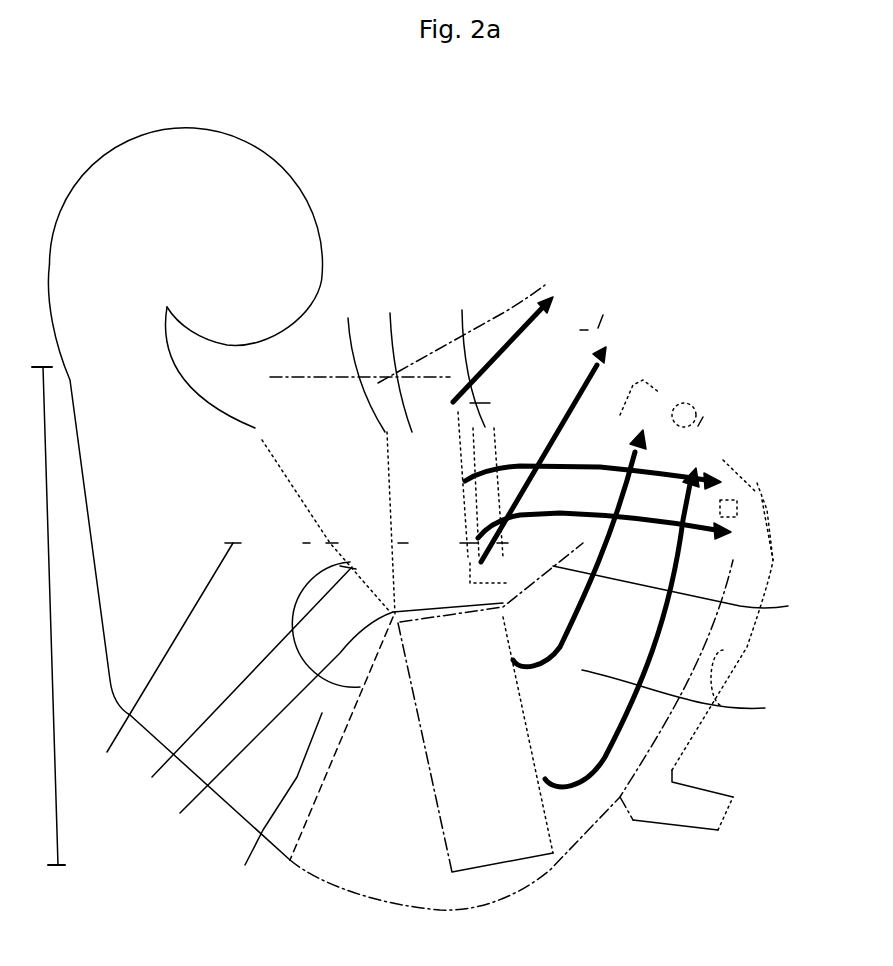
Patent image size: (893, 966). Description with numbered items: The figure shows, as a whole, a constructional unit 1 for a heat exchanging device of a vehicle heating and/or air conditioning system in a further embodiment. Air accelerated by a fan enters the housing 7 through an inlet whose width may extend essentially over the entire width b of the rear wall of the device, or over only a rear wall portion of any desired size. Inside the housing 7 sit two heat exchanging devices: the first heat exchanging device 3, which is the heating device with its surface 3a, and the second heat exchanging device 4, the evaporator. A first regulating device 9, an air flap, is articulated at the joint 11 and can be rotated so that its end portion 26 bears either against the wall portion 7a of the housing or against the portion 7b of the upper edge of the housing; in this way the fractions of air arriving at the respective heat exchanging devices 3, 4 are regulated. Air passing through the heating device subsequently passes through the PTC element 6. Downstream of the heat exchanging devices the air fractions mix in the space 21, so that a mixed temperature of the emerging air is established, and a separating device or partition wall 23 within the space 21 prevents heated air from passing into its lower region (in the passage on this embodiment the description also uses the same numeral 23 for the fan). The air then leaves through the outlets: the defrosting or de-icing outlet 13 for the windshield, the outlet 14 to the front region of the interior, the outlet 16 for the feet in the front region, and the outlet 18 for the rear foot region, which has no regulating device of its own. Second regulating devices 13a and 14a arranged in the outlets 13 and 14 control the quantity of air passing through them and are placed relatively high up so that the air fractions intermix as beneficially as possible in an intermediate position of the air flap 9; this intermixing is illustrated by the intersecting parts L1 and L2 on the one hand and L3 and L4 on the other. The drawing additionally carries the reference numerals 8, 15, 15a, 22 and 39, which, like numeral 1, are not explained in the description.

The assembly 1 is at (431, 282).
The first heat exchanging device 3 is at (397, 361).
The surface of the heat exchanging device 3a is at (366, 454).
The second heat exchanging device 4 is at (467, 830).
The PTC element 6 is at (484, 432).
The housing 7 is at (363, 378).
The wall portion of the housing 7a is at (252, 460).
The portion of the upper edge of the housing 7b is at (292, 862).
The rail 8 is at (162, 660).
The first regulating device 9 is at (243, 681).
The joint 11 is at (275, 704).
The defrosting outlet 13 is at (587, 312).
The second regulating device 13a is at (603, 315).
The outlet 14 is at (670, 403).
The second regulating device 14a is at (703, 417).
The stop 15 is at (727, 503).
The stop part 15a is at (737, 523).
The outlet 16 is at (723, 677).
The outlet 18 is at (683, 807).
The space 21 is at (688, 696).
The scroll 22 is at (252, 162).
The partition wall 23 is at (680, 587).
The end portion of the first regulating device 26 is at (255, 452).
The curved member 39 is at (271, 813).
The intersecting part L1 is at (593, 468).
The intersecting part L2 is at (604, 525).
The intersecting part L3 is at (579, 548).
The intersecting part L4 is at (622, 627).
The width of the rear wall b is at (54, 616).